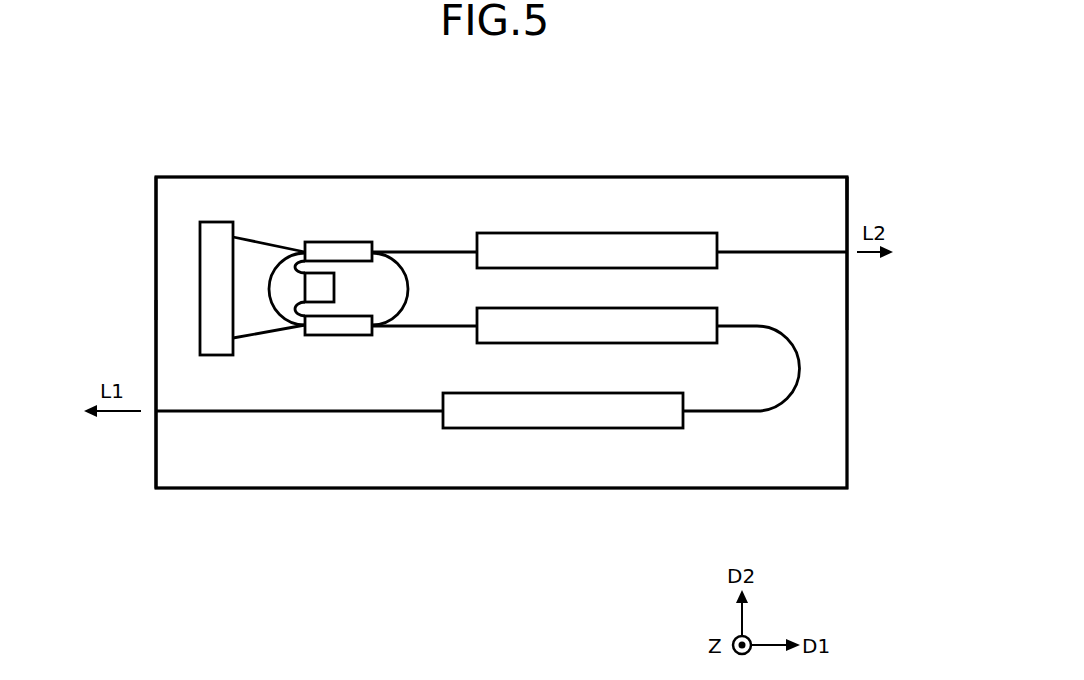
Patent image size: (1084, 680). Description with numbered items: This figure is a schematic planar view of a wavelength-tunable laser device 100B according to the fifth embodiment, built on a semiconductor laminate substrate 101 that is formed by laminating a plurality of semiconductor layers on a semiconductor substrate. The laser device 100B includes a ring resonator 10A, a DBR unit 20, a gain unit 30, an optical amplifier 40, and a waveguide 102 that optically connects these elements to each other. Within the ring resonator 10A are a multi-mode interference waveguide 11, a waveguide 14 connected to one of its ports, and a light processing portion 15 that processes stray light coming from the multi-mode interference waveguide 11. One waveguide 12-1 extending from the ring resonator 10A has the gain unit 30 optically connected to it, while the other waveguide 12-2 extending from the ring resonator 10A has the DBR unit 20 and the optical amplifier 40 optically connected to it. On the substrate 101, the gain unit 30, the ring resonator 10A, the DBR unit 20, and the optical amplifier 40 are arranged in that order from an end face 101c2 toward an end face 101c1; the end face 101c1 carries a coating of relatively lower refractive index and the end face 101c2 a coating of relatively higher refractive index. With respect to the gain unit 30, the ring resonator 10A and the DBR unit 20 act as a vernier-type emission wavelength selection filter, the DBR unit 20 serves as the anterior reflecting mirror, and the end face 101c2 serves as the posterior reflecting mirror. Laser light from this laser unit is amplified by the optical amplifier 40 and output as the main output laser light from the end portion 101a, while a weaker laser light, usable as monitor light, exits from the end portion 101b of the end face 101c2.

The laser device 100B is at (807, 176).
The semiconductor laminate substrate 101 is at (816, 445).
The end portion 101a is at (155, 413).
The end portion 101b is at (850, 253).
The end face 101c1 is at (155, 314).
The end face 101c2 is at (847, 190).
The waveguide 102 is at (799, 365).
The ring resonator 10A is at (249, 320).
The multi-mode interference waveguide 11 is at (362, 316).
The waveguide 12-1 is at (433, 250).
The waveguide 12-2 is at (403, 327).
The waveguide 14 is at (255, 236).
The light processing portion 15 is at (305, 286).
The DBR unit 20 is at (520, 308).
The gain unit 30 is at (687, 233).
The optical amplifier 40 is at (565, 429).